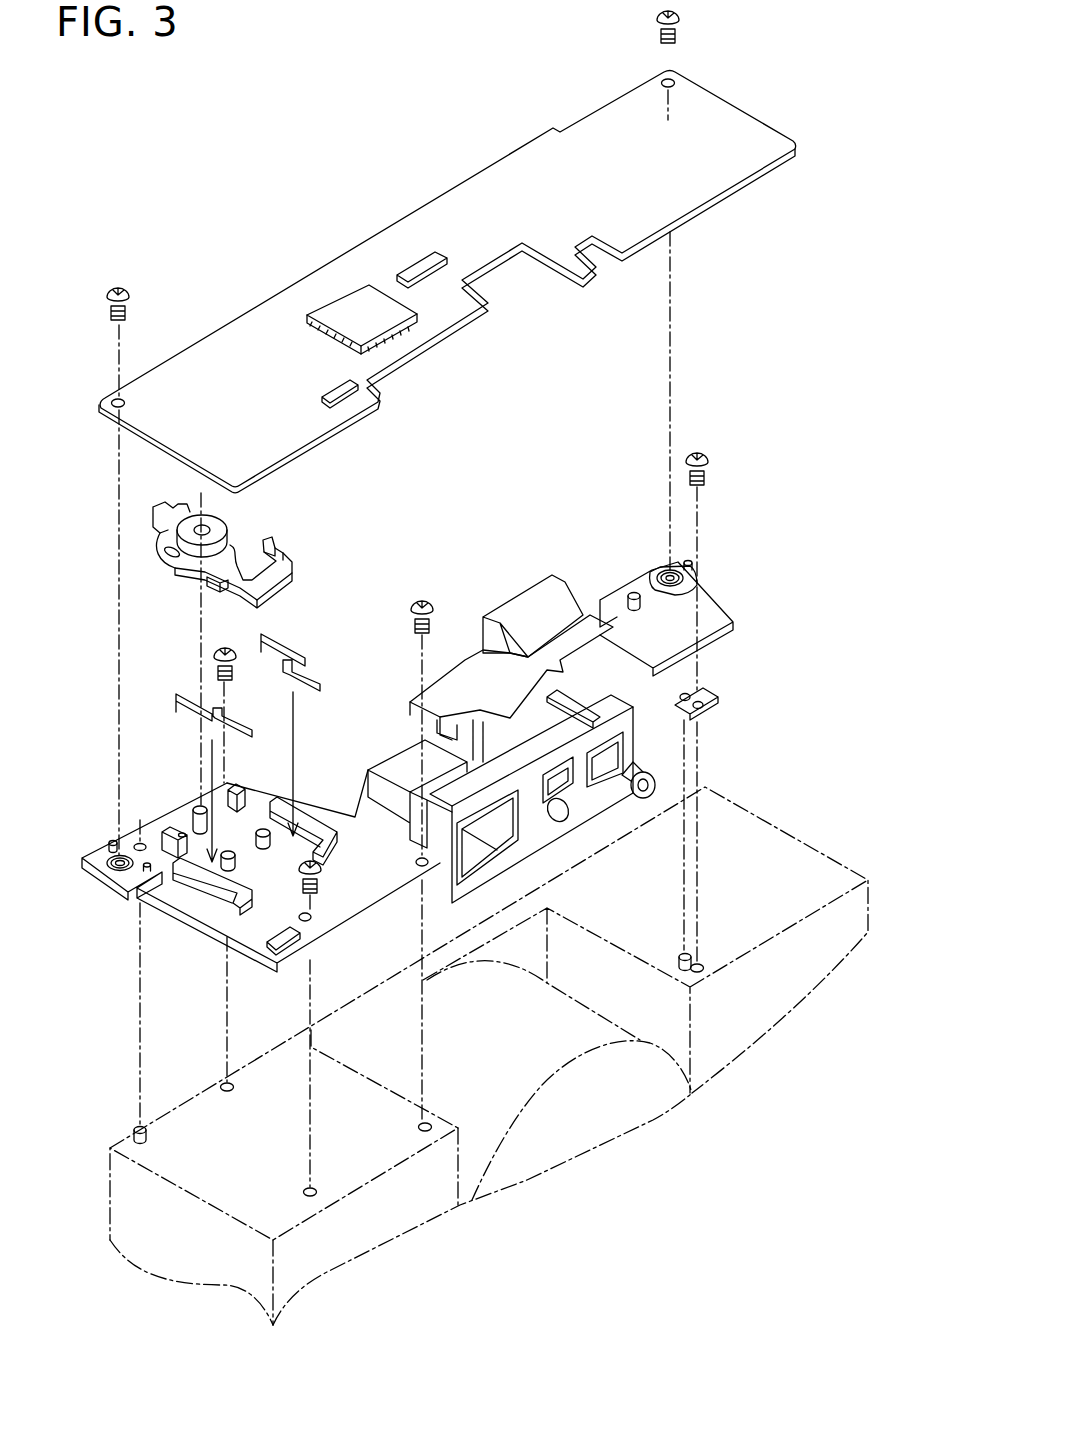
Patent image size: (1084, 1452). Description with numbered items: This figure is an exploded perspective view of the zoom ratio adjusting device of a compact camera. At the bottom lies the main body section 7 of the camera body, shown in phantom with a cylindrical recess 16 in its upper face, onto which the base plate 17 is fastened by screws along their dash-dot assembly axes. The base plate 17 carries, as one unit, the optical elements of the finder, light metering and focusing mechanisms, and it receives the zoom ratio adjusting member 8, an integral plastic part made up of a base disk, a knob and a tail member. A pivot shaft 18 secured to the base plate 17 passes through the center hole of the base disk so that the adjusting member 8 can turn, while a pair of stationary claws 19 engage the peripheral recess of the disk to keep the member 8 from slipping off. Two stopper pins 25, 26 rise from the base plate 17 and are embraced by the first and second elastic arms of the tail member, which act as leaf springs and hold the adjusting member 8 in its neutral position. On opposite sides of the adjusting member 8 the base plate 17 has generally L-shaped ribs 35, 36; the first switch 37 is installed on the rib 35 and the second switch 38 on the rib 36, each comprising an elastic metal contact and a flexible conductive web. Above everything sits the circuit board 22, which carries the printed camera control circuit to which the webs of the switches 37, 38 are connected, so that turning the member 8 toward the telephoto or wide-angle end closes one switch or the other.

The circuit board 22 is at (303, 262).
The zoom ratio adjusting member 8 is at (263, 521).
The base plate 17 is at (458, 609).
The second switch 38 is at (187, 685).
The first switch 37 is at (318, 668).
The stationary claws 19 is at (238, 784).
The pivot shaft 18 is at (195, 811).
The L-shaped rib 35 is at (312, 808).
The stopper pin 26 is at (272, 836).
The stopper pin 25 is at (226, 866).
The L-shaped rib 36 is at (245, 896).
The main body section 7 is at (392, 1246).
The cylindrical recess 16 is at (542, 1087).